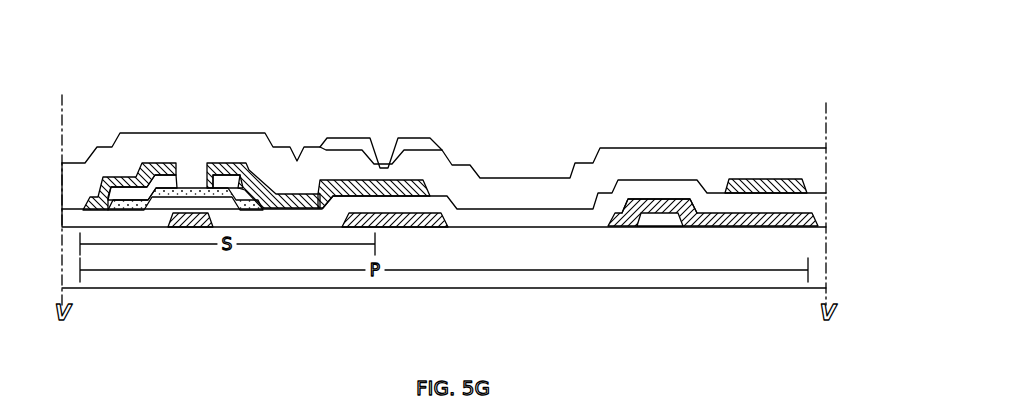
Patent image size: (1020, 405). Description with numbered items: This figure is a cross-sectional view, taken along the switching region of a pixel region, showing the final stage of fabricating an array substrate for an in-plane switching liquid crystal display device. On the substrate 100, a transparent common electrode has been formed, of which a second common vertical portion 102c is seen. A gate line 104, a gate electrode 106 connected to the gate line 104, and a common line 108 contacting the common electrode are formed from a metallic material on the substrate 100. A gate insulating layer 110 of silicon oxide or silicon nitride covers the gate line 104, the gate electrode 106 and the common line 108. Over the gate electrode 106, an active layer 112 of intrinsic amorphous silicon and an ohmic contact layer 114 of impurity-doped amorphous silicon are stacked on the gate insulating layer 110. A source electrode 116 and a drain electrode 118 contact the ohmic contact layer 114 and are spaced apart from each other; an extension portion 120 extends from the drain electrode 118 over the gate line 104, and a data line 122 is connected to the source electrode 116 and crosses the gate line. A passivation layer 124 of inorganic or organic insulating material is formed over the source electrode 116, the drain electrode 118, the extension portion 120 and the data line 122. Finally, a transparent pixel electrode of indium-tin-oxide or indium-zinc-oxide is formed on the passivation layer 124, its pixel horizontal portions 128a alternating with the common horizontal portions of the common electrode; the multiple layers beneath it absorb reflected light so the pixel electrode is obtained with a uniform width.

The substrate 100 is at (804, 263).
The second common vertical portion 102c is at (660, 199).
The gate line 104 is at (445, 212).
The gate electrode 106 is at (200, 215).
The common line 108 is at (643, 199).
The gate insulating layer 110 is at (826, 207).
The active layer 112 is at (225, 186).
The ohmic contact layer 114 is at (253, 175).
The source electrode 116 is at (110, 177).
The drain electrode 118 is at (301, 190).
The extension portion 120 is at (413, 180).
The data line 122 is at (770, 179).
The passivation layer 124 is at (529, 167).
The pixel horizontal portion 128a is at (364, 136).